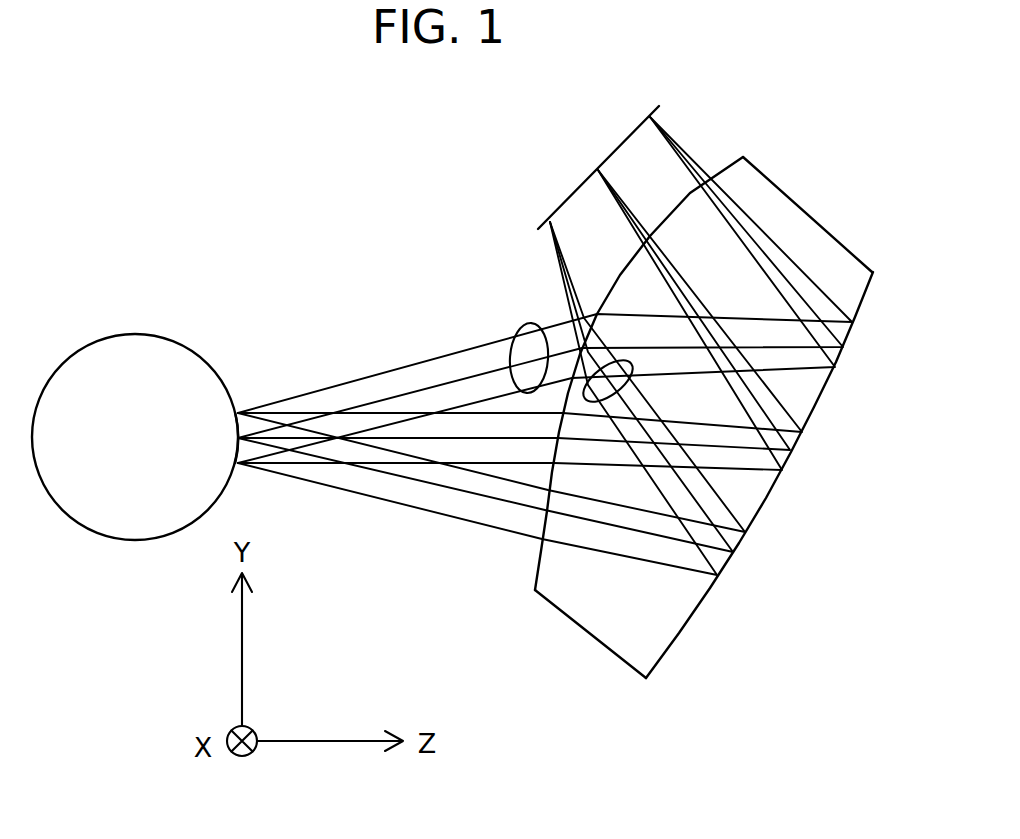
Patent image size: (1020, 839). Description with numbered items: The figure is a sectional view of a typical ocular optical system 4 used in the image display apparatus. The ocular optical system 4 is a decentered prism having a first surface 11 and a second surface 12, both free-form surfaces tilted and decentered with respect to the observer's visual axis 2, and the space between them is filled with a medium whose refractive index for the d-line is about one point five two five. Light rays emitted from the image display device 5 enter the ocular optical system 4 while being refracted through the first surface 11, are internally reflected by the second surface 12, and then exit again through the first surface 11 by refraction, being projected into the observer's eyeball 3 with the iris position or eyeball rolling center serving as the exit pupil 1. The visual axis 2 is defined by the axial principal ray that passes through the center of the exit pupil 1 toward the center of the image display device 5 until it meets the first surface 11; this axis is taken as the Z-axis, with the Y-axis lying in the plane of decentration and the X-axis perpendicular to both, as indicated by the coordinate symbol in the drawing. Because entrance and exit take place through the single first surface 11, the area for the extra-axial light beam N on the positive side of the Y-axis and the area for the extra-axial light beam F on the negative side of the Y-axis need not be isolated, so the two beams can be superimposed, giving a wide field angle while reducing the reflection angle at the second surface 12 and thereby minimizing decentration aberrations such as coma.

The exit pupil 1 is at (240, 412).
The visual axis 2 is at (413, 437).
The observer's eyeball 3 is at (105, 362).
The ocular optical system 4 is at (671, 417).
The image display device 5 is at (572, 190).
The first surface 11 is at (535, 564).
The second surface 12 is at (698, 610).
The extra-axial light beam on the positive side of the Y-axis N is at (523, 325).
The extra-axial light beam on the negative side of the Y-axis F is at (623, 357).